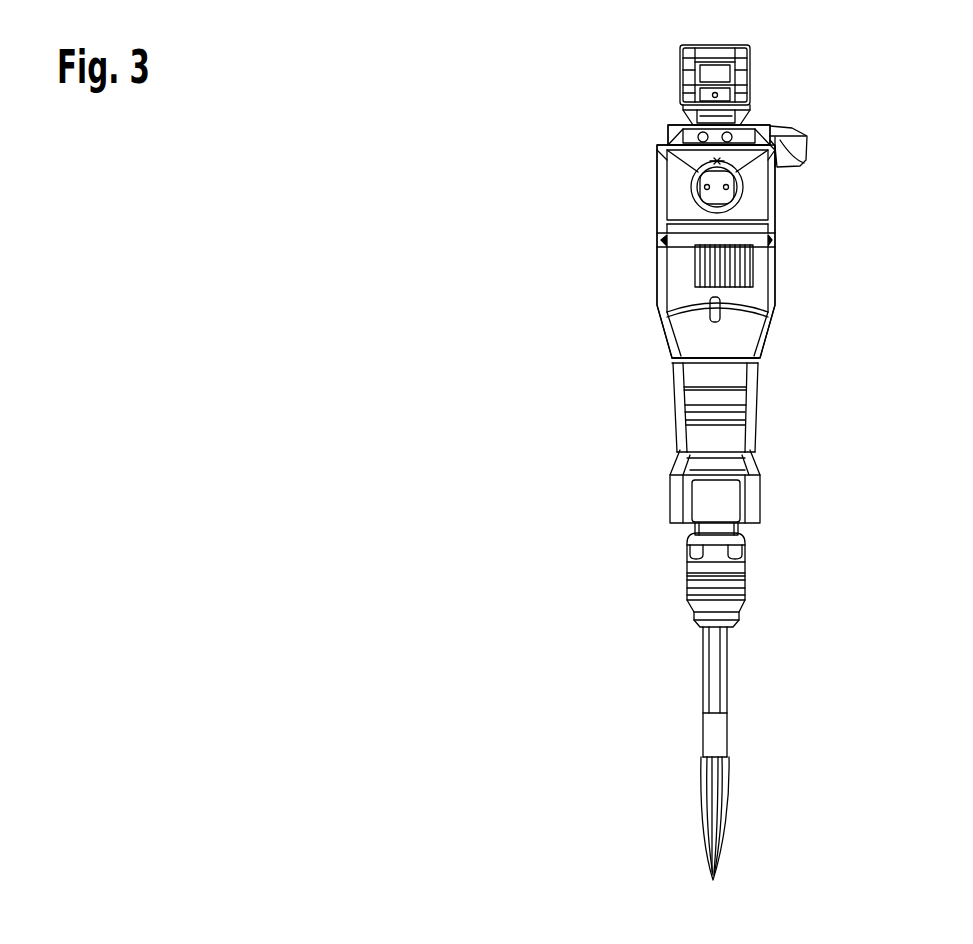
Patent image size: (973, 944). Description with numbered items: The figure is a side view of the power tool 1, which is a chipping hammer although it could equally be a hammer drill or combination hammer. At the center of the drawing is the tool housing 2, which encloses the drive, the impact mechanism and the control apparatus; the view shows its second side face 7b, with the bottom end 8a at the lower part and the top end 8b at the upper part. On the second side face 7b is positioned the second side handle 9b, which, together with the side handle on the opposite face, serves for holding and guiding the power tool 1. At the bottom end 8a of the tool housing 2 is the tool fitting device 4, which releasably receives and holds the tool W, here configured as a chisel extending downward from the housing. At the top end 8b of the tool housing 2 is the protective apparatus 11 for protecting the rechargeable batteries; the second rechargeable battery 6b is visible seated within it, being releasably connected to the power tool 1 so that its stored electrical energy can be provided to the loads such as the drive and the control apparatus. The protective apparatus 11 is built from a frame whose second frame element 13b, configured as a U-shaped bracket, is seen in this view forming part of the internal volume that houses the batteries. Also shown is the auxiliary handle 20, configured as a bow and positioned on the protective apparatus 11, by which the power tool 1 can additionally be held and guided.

The power tool 1 is at (539, 344).
The tool housing 2 is at (697, 433).
The tool fitting device 4 is at (697, 572).
The second rechargeable battery 6b is at (682, 78).
The second side face 7b is at (740, 385).
The bottom end 8a is at (732, 507).
The top end 8b is at (660, 240).
The second side handle 9b is at (742, 197).
The protective apparatus 11 is at (824, 110).
The second frame element 13b is at (755, 78).
The auxiliary handle 20 is at (807, 147).
The tool W is at (717, 734).